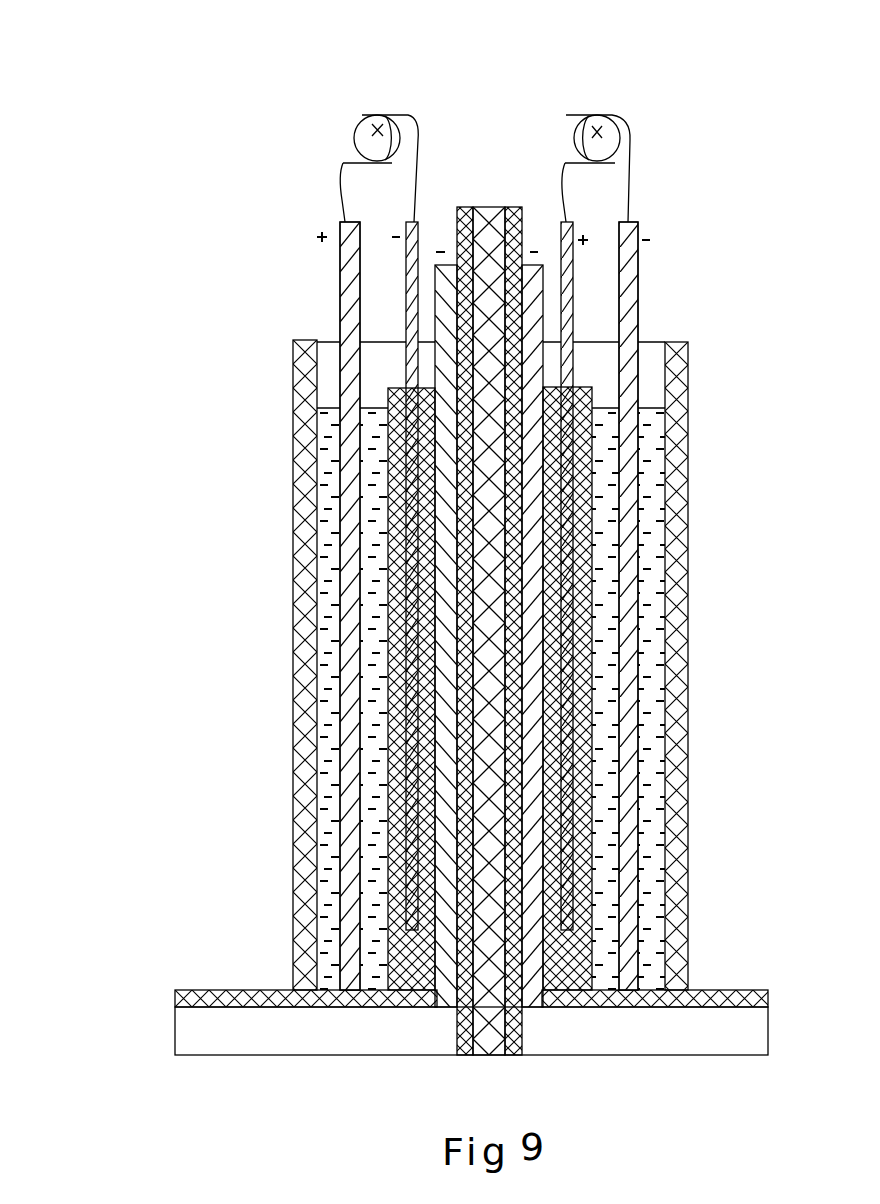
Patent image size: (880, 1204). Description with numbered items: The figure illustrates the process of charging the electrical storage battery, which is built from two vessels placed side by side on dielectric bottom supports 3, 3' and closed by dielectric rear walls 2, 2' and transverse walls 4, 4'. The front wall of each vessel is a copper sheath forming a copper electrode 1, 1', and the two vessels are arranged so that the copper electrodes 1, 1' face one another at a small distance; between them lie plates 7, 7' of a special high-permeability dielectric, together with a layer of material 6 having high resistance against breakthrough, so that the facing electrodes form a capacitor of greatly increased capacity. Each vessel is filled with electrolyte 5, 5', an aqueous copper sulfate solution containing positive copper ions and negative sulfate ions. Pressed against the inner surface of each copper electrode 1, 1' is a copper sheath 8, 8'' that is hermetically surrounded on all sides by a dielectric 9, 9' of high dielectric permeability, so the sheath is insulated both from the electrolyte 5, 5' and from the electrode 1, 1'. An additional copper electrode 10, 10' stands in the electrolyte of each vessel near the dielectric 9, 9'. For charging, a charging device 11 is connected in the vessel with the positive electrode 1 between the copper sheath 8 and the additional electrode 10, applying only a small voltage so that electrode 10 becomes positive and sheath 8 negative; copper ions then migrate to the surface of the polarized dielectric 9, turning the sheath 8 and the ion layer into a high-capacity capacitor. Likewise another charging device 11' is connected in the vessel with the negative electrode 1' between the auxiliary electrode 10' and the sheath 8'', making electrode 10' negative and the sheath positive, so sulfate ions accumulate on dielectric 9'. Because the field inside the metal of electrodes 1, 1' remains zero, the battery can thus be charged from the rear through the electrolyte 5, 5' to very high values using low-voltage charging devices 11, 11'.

The copper electrode 1 is at (448, 565).
The copper electrode 1' is at (555, 542).
The rear wall 2 is at (231, 665).
The rear wall 2' is at (748, 666).
The bottom support 3 is at (459, 961).
The bottom support 3' is at (702, 965).
The transverse wall 4 is at (294, 610).
The transverse wall 4' is at (672, 617).
The electrolyte 5 is at (255, 699).
The electrolyte 5' is at (712, 699).
The layer of material 6 is at (478, 210).
The plate 7 is at (464, 544).
The plate 7' is at (527, 576).
The copper sheath 8 is at (348, 533).
The copper sheath 8'' is at (689, 555).
The dielectric 9 is at (288, 644).
The dielectric 9' is at (712, 662).
The additional copper electrode 10 is at (281, 589).
The additional copper electrode 10' is at (738, 606).
The charging device 11 is at (312, 148).
The charging device 11' is at (679, 157).